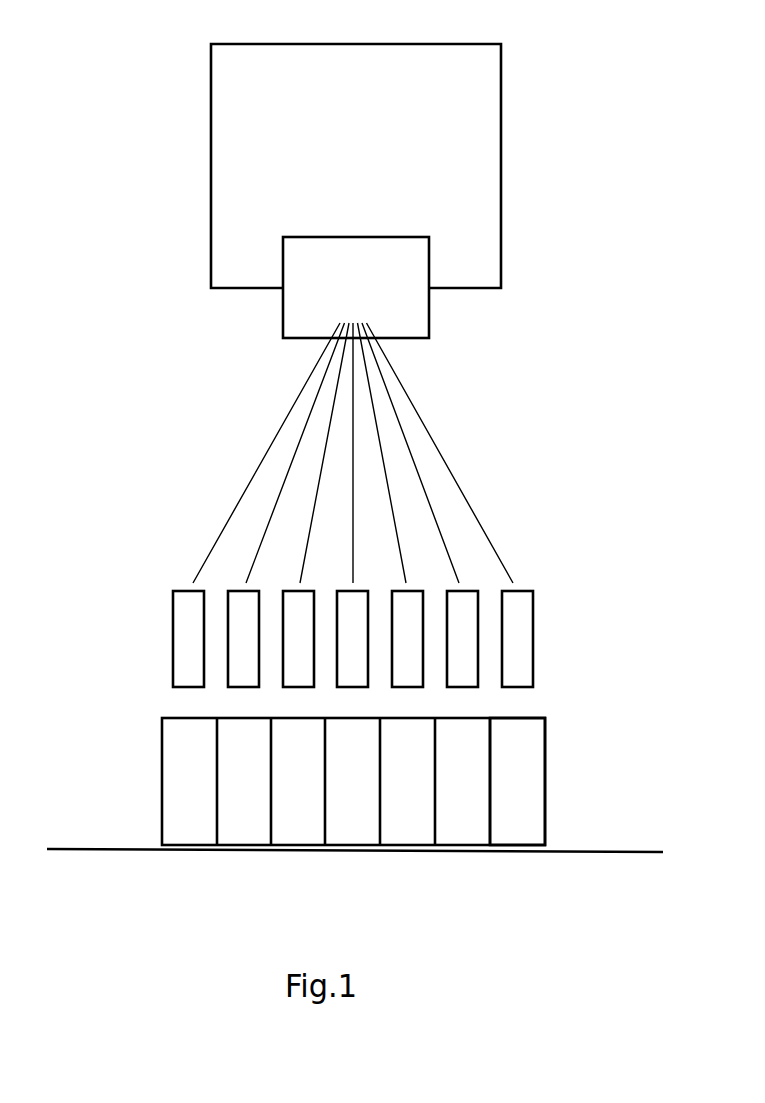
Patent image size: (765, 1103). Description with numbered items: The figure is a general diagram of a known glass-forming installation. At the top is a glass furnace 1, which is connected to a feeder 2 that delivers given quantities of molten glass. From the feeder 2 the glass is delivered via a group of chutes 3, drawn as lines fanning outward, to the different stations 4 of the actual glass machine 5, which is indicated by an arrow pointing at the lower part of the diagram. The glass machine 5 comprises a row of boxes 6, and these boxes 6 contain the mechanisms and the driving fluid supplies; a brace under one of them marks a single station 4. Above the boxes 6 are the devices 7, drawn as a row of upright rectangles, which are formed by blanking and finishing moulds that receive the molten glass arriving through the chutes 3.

The glass furnace 1 is at (475, 234).
The feeder 2 is at (397, 312).
The chutes 3 is at (450, 477).
The stations 4 is at (544, 859).
The glass machine 5 is at (424, 701).
The boxes 6 is at (518, 803).
The devices formed by blanking and finishing moulds 7 is at (522, 622).